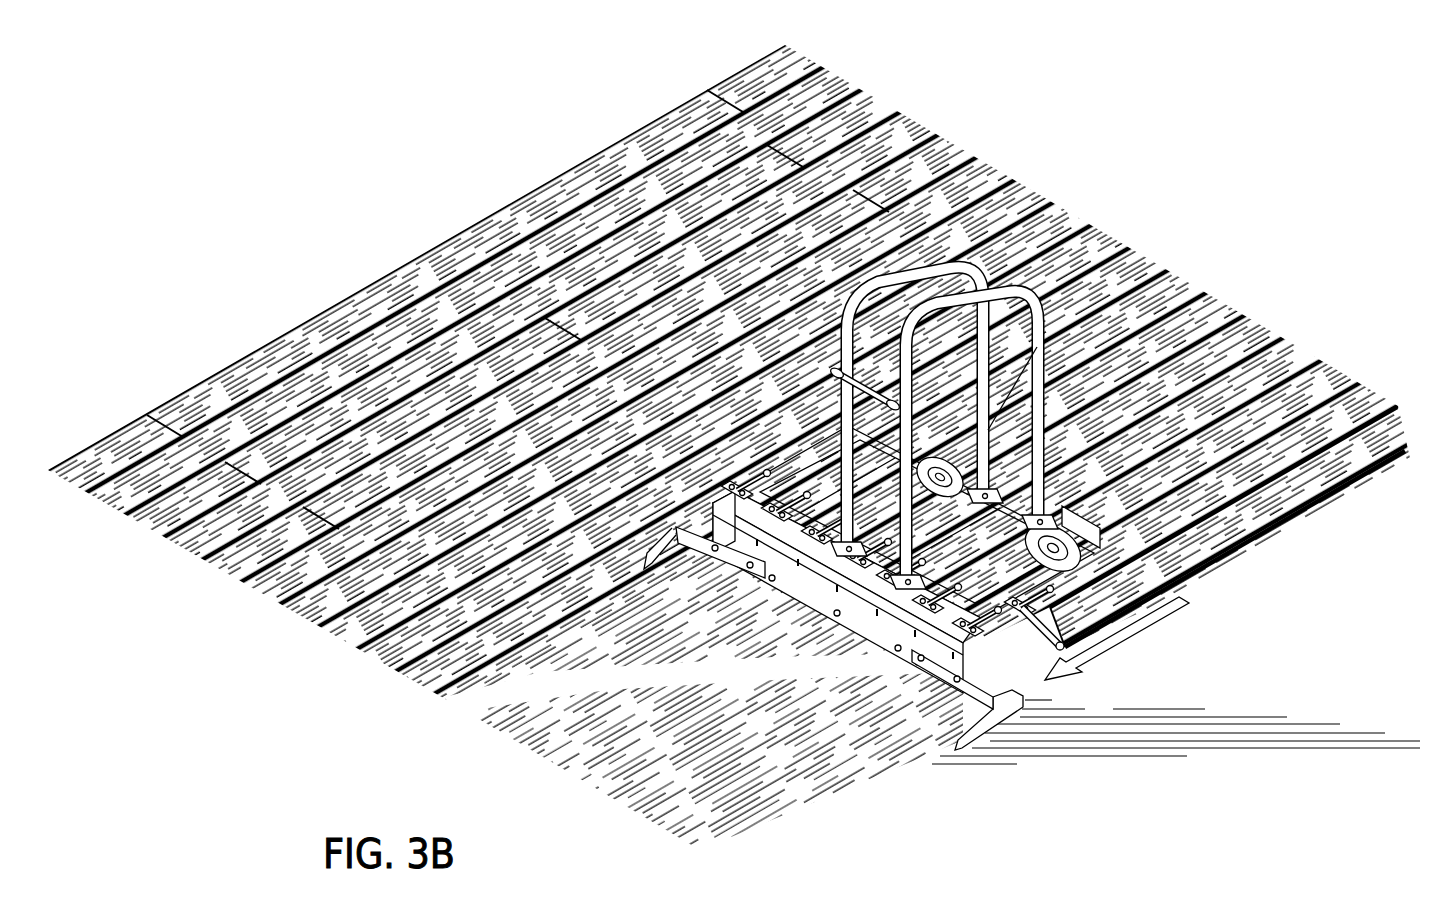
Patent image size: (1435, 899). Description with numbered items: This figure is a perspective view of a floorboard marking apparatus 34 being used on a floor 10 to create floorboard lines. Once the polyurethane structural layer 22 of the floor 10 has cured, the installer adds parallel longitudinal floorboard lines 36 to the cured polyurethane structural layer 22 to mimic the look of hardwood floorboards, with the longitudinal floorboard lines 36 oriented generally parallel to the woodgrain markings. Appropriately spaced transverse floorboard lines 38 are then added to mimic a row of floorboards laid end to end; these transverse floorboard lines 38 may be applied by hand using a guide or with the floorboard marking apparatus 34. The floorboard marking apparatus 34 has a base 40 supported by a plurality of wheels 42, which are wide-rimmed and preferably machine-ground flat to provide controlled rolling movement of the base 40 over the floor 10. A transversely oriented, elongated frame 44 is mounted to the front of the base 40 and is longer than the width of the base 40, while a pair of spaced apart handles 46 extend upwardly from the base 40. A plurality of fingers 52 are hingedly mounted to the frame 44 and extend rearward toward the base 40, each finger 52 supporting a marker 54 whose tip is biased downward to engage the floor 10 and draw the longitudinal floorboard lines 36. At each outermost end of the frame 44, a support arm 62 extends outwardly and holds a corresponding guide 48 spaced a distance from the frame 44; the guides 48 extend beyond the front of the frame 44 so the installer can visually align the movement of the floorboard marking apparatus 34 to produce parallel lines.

The floor 10 is at (734, 447).
The polyurethane structural layer 22 is at (622, 700).
The floorboard marking apparatus 34 is at (936, 512).
The longitudinal floorboard lines 36 is at (458, 282).
The transverse floorboard lines 38 is at (722, 100).
The base 40 is at (992, 531).
The wheels 42 is at (932, 470).
The frame 44 is at (862, 630).
The handles 46 is at (932, 268).
The guides 48 is at (702, 552).
The fingers 52 is at (762, 470).
The marker 54 is at (1047, 622).
The support arm 62 is at (962, 707).